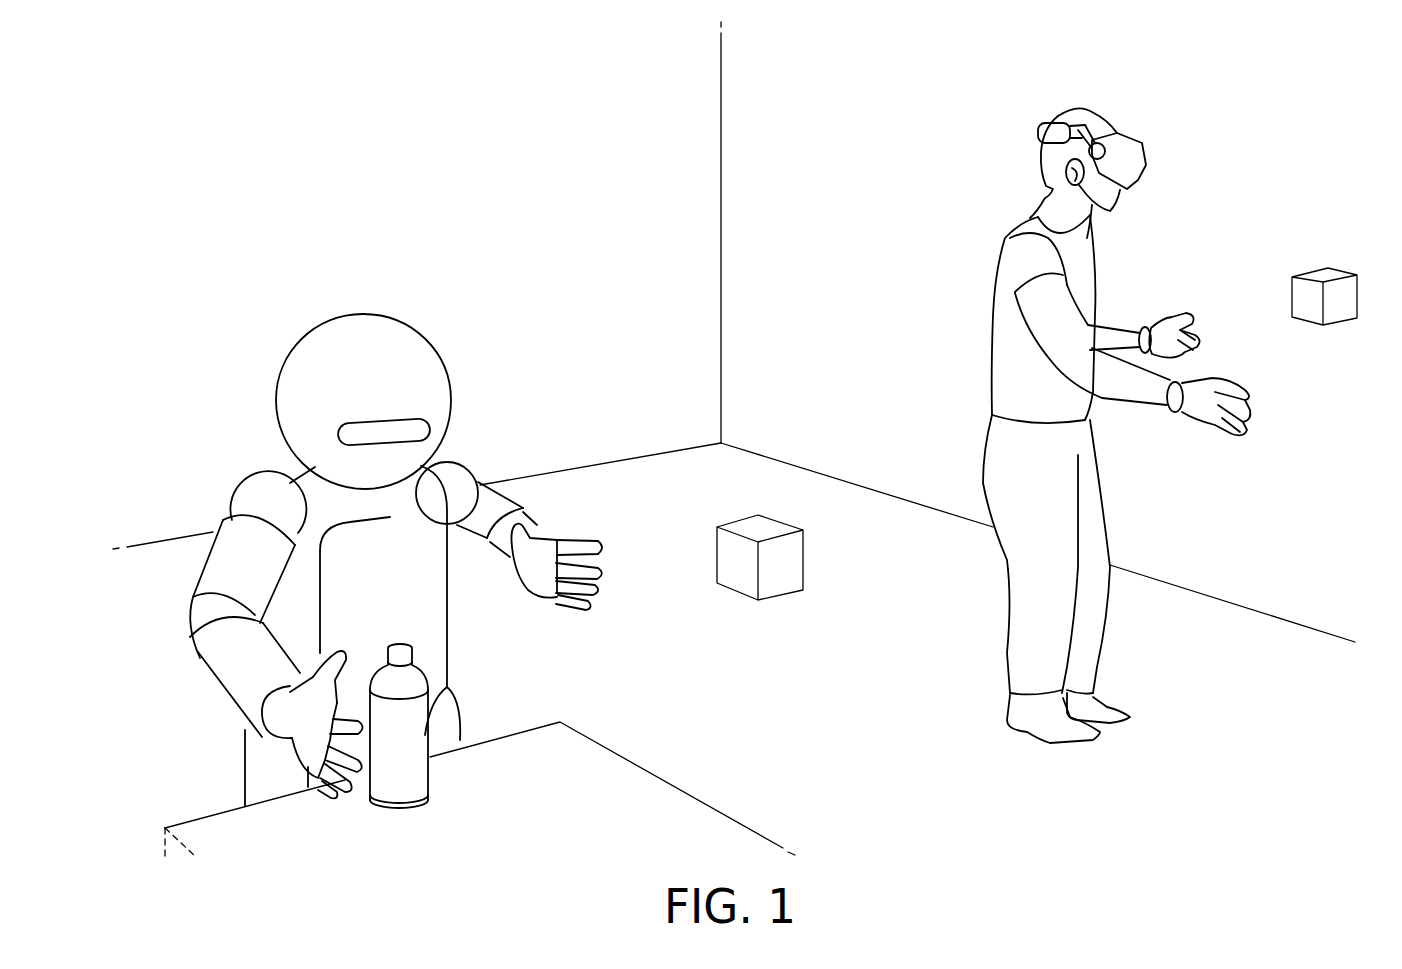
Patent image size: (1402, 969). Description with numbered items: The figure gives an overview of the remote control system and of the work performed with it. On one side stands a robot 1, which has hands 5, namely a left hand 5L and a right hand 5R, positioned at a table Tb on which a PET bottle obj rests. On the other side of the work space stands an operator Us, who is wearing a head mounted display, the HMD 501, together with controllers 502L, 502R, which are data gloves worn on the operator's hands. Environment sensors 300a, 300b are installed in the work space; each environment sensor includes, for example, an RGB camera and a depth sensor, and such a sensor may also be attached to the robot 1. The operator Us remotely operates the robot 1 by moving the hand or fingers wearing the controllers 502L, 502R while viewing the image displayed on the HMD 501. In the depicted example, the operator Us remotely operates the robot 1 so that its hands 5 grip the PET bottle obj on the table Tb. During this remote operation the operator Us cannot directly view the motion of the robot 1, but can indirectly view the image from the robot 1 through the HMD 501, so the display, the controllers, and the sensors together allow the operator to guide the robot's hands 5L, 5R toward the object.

The robot 1 is at (370, 548).
The hands 5 is at (370, 630).
The left hand 5L is at (540, 567).
The right hand 5R is at (303, 748).
The PET bottle obj is at (420, 738).
The table Tb is at (673, 800).
The environment sensor 300a is at (783, 580).
The environment sensor 300b is at (1323, 270).
The operator Us is at (1084, 425).
The HMD 501 is at (1143, 155).
The controller 502L is at (1178, 330).
The controller 502R is at (1197, 415).